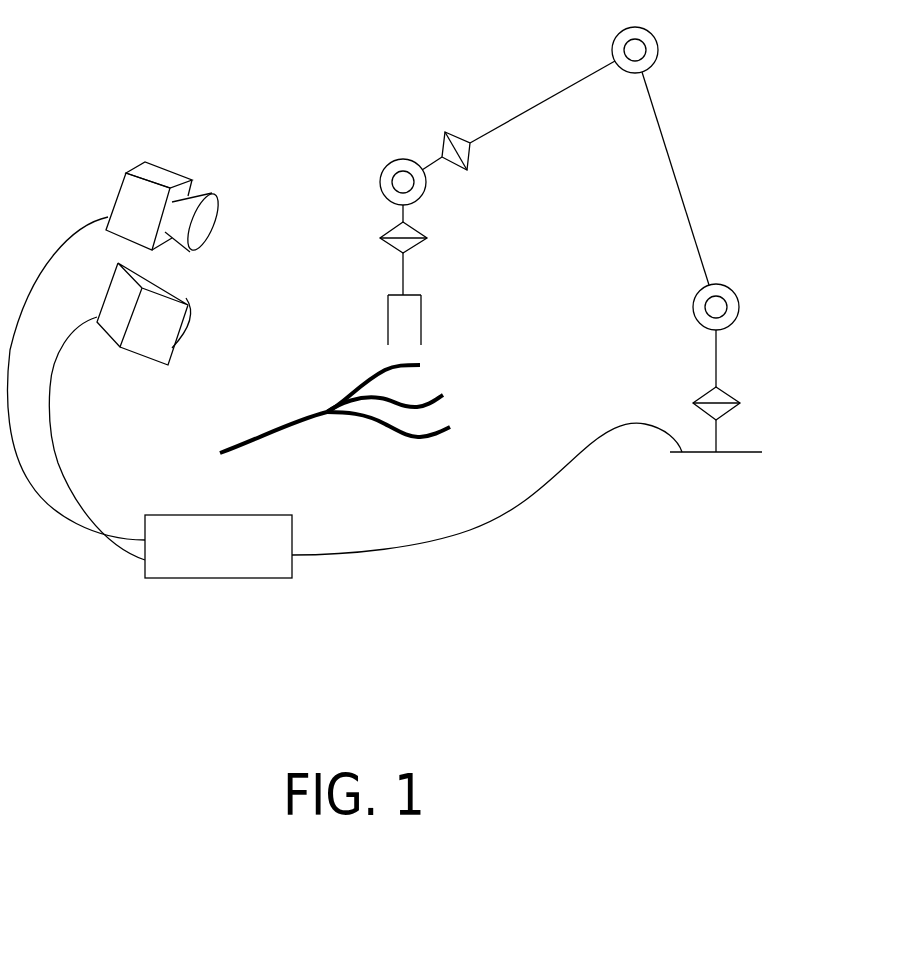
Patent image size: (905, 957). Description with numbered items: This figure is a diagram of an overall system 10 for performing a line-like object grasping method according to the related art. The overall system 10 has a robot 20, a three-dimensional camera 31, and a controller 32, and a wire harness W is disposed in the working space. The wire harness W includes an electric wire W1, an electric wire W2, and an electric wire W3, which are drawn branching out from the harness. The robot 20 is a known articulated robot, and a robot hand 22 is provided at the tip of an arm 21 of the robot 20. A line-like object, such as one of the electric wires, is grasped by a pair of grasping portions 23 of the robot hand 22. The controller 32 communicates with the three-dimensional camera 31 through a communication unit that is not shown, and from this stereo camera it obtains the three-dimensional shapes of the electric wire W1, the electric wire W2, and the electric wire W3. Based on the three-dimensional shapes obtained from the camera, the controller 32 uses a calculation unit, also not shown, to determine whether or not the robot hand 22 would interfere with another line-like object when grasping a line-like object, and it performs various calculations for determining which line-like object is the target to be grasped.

The overall system 10 is at (128, 87).
The robot 20 is at (678, 188).
The arm 21 is at (658, 123).
The robot hand 22 is at (422, 302).
The grasping portions 23 is at (388, 315).
The three-dimensional camera 31 is at (135, 198).
The controller 32 is at (212, 572).
The wire harness W is at (317, 417).
The electric wire W1 is at (417, 400).
The electric wire W2 is at (407, 363).
The electric wire W3 is at (420, 433).